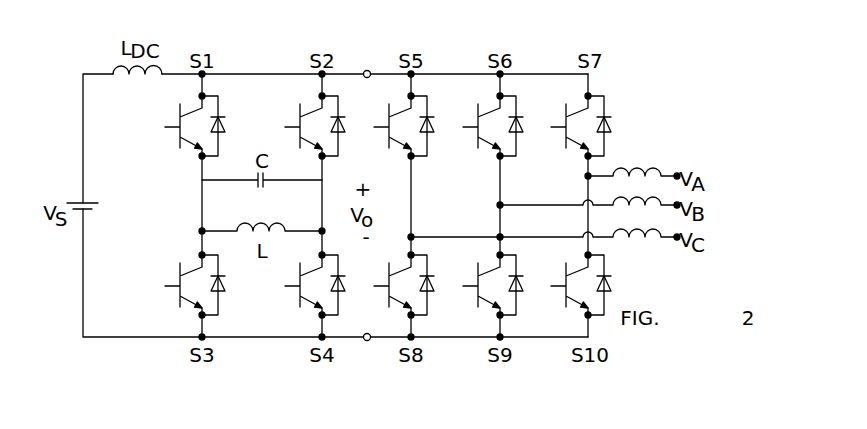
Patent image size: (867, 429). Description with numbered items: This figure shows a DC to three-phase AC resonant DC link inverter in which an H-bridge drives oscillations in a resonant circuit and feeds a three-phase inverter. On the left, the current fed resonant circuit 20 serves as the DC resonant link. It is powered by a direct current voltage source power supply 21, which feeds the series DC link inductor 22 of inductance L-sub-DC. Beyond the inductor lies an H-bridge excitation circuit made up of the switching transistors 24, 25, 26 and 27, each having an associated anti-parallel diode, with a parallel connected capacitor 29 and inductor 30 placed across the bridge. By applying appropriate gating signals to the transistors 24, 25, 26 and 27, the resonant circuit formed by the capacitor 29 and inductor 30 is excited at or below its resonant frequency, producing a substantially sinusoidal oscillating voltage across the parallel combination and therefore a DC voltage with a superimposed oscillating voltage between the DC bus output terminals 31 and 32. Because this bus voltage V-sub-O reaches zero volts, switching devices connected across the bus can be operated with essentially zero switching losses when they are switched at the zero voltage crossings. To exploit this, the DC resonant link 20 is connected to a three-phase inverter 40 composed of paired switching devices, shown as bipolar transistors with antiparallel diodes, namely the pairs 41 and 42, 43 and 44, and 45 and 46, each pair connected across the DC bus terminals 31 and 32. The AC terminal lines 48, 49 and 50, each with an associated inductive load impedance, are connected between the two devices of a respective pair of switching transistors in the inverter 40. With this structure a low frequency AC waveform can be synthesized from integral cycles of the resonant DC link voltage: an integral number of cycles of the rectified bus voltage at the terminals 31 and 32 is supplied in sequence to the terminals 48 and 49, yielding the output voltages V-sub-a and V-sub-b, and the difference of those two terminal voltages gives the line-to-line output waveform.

The current fed resonant circuit 20 is at (237, 170).
The direct current voltage source power supply 21 is at (75, 200).
The series DC link inductor 22 is at (114, 66).
The switching transistor 24 is at (180, 143).
The switching transistor 25 is at (299, 111).
The switching transistor 26 is at (180, 303).
The switching transistor 27 is at (299, 303).
The capacitor 29 is at (257, 185).
The inductor 30 is at (285, 224).
The DC bus output terminal 31 is at (370, 69).
The DC bus output terminal 32 is at (364, 343).
The three-phase inverter 40 is at (478, 170).
The switching device 41 is at (388, 146).
The switching device 42 is at (388, 306).
The switching device 43 is at (477, 146).
The switching device 44 is at (477, 306).
The switching device 45 is at (565, 146).
The switching device 46 is at (565, 306).
The AC terminal line 48 is at (622, 165).
The AC terminal line 49 is at (657, 197).
The AC terminal line 50 is at (650, 233).